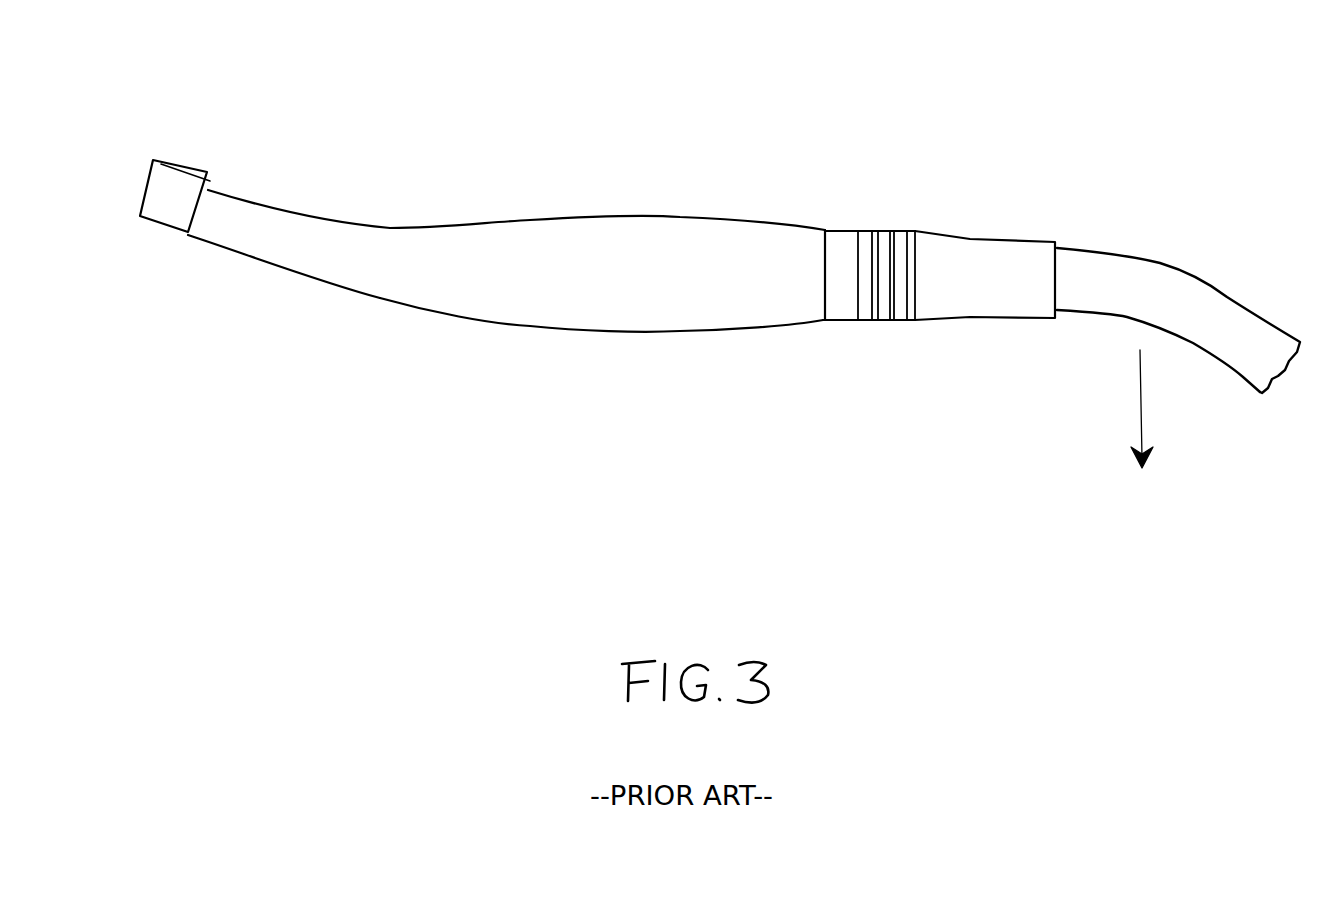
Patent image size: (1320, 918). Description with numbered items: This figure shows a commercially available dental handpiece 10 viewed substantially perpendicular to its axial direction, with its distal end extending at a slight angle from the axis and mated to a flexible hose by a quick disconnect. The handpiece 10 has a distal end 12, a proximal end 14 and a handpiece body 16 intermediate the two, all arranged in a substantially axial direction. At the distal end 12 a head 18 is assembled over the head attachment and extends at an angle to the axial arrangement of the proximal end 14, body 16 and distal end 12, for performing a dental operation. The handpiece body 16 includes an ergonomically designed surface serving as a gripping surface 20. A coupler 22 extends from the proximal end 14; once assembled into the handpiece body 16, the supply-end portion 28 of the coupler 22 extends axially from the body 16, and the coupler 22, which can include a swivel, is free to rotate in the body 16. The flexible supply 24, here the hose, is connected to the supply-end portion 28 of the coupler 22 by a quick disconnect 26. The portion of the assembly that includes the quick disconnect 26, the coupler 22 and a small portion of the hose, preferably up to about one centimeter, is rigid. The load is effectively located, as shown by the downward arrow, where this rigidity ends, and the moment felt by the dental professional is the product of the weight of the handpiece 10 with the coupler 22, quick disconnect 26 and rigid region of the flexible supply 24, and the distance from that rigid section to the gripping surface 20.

The dental handpiece 10 is at (647, 141).
The distal end 12 is at (245, 198).
The proximal end 14 is at (798, 232).
The handpiece body 16 is at (445, 228).
The head 18 is at (137, 217).
The gripping surface 20 is at (543, 238).
The coupler 22 is at (893, 203).
The flexible supply 24 is at (1185, 287).
The quick disconnect 26 is at (928, 310).
The supply-end portion 28 is at (903, 315).